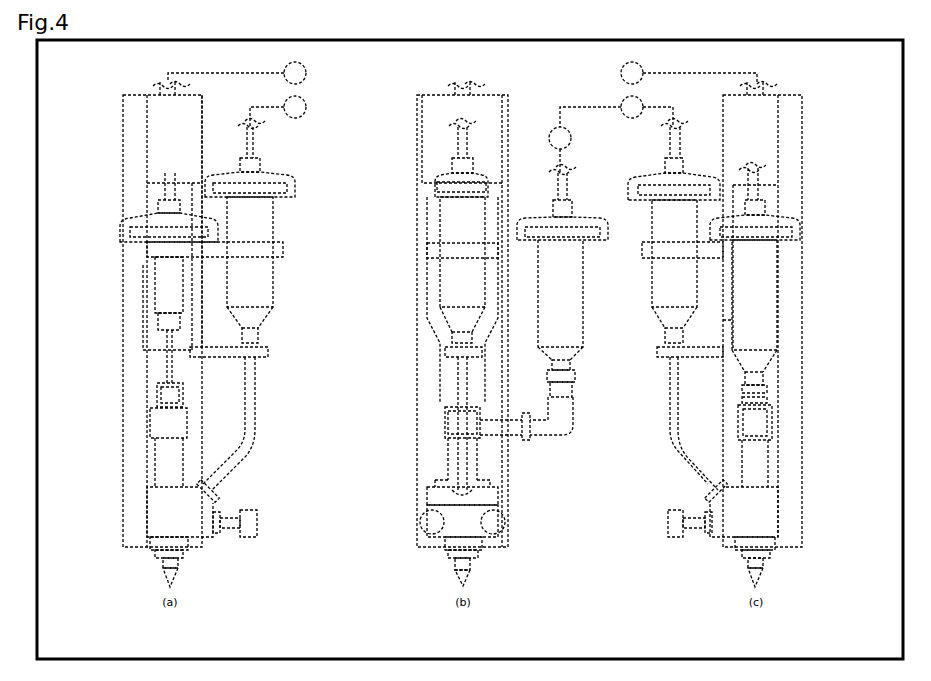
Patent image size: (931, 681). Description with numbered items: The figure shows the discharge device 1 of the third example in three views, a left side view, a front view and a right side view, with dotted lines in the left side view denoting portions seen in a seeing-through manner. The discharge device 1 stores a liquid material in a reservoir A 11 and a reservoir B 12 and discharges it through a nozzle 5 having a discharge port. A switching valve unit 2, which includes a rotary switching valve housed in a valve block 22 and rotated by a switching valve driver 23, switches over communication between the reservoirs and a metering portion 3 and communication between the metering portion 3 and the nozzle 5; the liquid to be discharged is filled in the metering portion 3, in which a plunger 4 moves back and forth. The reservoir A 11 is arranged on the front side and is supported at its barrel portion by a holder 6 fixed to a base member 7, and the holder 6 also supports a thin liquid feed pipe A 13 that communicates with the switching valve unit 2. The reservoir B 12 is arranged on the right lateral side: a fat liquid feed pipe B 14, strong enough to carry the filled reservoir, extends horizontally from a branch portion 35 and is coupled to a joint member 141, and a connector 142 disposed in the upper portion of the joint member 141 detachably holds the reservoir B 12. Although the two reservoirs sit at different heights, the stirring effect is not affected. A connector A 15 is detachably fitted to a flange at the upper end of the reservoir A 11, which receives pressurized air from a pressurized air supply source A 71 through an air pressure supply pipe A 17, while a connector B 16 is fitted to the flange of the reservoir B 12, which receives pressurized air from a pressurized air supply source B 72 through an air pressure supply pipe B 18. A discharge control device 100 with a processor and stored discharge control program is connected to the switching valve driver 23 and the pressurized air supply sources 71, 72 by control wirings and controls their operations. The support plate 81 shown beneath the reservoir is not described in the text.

The discharge device 1 is at (382, 384).
The switching valve unit 2 is at (377, 527).
The metering portion 3 is at (176, 462).
The plunger 4 is at (192, 355).
The nozzle 5 is at (177, 577).
The holder 6 is at (273, 250).
The base member 7 is at (132, 443).
The reservoir A 11 is at (460, 280).
The reservoir B 12 is at (143, 339).
The liquid feed pipe A 13 is at (253, 453).
The liquid feed pipe B 14 is at (487, 423).
The connector A 15 is at (245, 177).
The connector B 16 is at (565, 223).
The air pressure supply pipe A 17 is at (253, 145).
The air pressure supply pipe B 18 is at (560, 192).
The valve block 22 is at (198, 527).
The switching valve driver 23 is at (172, 118).
The branch portion 35 is at (448, 423).
The pressurized air supply source A 71 is at (306, 106).
The pressurized air supply source B 72 is at (560, 128).
The support plate 81 is at (268, 350).
The discharge control device 100 is at (306, 70).
The joint member 141 is at (562, 420).
The connector 142 is at (575, 387).